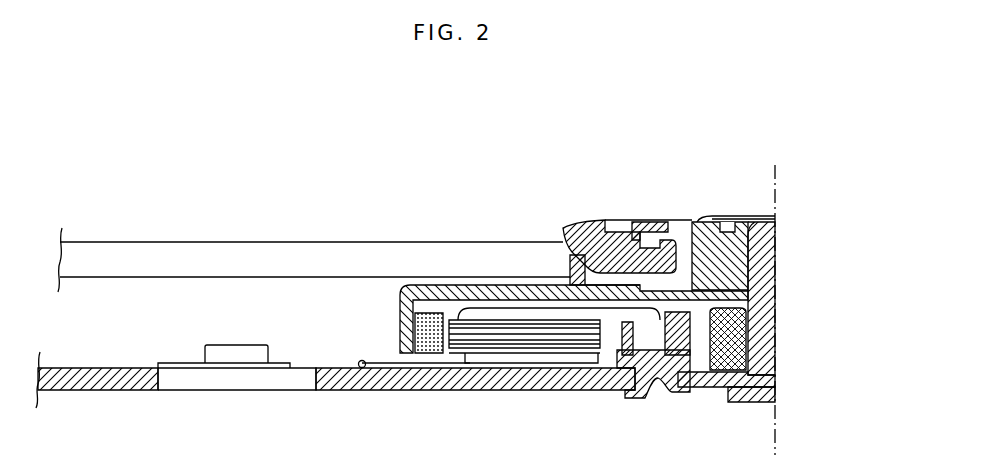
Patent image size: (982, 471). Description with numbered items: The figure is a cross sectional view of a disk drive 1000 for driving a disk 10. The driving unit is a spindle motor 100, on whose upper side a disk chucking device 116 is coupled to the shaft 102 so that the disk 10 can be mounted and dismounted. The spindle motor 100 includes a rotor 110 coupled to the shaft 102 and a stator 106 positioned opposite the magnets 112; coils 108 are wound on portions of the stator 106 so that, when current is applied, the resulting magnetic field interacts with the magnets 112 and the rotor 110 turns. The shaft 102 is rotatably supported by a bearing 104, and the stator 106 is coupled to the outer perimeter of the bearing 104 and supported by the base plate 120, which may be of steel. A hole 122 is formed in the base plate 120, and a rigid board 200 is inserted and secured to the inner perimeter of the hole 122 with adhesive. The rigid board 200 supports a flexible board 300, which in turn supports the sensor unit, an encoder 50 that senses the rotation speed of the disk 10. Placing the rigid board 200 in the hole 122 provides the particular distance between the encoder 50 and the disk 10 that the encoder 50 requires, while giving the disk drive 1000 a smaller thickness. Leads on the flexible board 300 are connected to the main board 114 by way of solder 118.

The disk drive 1000 is at (722, 116).
The disk 10 is at (253, 253).
The encoder 50 is at (216, 352).
The spindle motor 100 is at (843, 210).
The shaft 102 is at (760, 281).
The bearing 104 is at (735, 336).
The stator 106 is at (748, 368).
The coil 108 is at (740, 390).
The rotor 110 is at (740, 241).
The magnet 112 is at (443, 358).
The main board 114 is at (470, 370).
The disk chucking device 116 is at (775, 212).
The solder 118 is at (366, 367).
The base plate 120 is at (86, 384).
The hole 122 is at (318, 382).
The rigid board 200 is at (232, 384).
The flexible board 300 is at (179, 366).